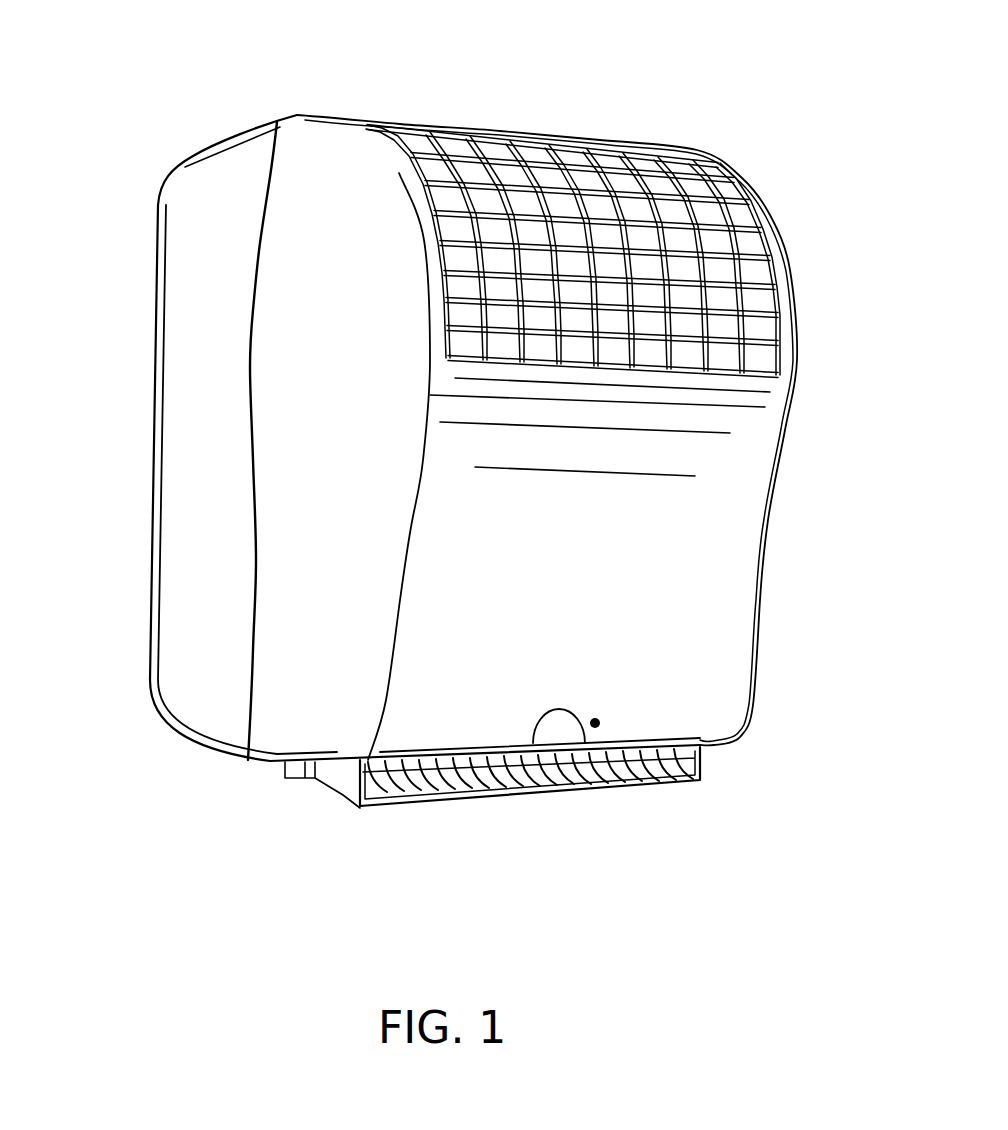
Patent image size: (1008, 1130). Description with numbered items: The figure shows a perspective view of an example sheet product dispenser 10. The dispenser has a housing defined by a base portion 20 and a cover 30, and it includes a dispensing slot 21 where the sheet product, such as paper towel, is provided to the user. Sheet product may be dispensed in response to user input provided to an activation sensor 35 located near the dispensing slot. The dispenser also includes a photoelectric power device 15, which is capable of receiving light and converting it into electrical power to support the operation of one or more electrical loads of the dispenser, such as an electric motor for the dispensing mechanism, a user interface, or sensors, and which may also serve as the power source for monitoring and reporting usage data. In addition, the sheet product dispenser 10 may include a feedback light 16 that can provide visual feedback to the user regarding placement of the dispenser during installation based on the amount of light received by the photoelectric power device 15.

The sheet product dispenser 10 is at (147, 78).
The photoelectric power device 15 is at (698, 148).
The feedback light 16 is at (605, 707).
The base portion 20 is at (157, 312).
The dispensing slot 21 is at (618, 840).
The cover 30 is at (790, 217).
The activation sensor 35 is at (555, 752).